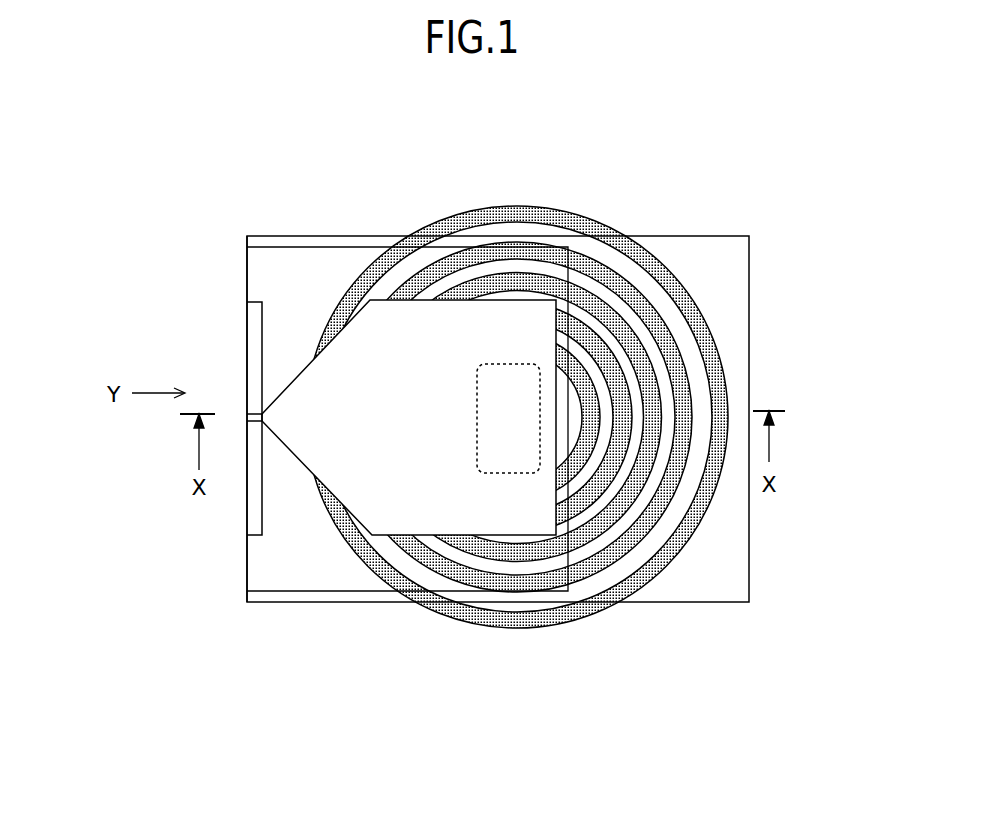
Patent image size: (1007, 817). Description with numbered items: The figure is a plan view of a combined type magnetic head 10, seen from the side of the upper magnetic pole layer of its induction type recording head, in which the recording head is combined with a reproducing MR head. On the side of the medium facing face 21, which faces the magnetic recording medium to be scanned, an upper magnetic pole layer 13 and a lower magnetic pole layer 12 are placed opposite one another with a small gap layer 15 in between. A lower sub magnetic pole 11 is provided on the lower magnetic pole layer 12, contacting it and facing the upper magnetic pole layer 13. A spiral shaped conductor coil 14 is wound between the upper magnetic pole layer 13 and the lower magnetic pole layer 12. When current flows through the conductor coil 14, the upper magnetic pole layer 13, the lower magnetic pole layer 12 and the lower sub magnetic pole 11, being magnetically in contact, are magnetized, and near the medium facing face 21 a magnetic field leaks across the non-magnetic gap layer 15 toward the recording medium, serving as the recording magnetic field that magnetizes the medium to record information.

The combined type magnetic head 10 is at (514, 141).
The lower sub magnetic pole 11 is at (255, 493).
The lower magnetic pole layer 12 is at (255, 577).
The upper magnetic pole layer 13 is at (357, 510).
The conductor coil 14 is at (590, 220).
The gap layer 15 is at (247, 414).
The medium facing face 21 is at (247, 289).